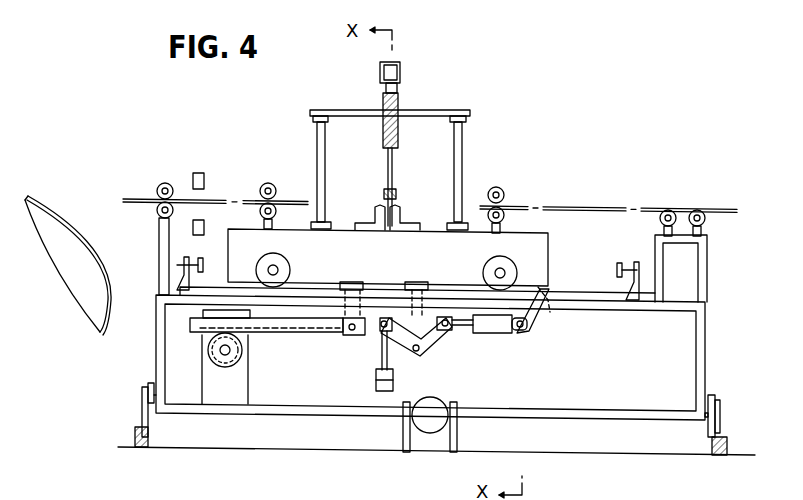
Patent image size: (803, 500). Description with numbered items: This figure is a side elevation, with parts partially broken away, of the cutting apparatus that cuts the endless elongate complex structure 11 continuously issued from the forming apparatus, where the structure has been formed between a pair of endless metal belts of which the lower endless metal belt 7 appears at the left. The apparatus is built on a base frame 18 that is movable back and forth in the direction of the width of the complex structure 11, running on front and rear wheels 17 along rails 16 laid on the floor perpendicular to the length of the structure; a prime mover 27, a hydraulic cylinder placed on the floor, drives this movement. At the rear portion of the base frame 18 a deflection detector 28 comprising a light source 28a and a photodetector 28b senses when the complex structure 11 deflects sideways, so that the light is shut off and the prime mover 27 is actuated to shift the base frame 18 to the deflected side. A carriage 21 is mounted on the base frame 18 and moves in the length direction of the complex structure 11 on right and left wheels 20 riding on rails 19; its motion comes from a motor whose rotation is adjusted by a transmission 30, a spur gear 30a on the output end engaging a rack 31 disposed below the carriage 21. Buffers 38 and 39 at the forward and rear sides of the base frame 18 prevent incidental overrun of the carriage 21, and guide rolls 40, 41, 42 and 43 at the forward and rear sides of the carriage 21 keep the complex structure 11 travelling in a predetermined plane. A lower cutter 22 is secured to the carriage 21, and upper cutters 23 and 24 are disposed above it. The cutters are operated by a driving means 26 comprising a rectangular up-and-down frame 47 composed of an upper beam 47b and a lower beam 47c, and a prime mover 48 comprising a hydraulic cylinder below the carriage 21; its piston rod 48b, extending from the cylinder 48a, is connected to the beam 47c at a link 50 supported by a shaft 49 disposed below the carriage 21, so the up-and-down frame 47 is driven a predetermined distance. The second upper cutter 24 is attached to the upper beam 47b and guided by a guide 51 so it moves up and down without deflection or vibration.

The lower endless metal belt 7 is at (80, 218).
The complex structure 11 is at (588, 198).
The rails 16 is at (134, 433).
The front and rear wheels 17 is at (140, 402).
The base frame 18 is at (613, 412).
The rails 19 is at (583, 295).
The right and left wheels 20 is at (290, 270).
The carriage 21 is at (548, 232).
The lower cutter 22 is at (378, 229).
The first upper cutter 23 is at (396, 195).
The second upper cutter 24 is at (388, 172).
The driving means 26 is at (441, 336).
The prime mover 27 is at (430, 433).
The deflection detector 28 is at (179, 165).
The light source 28a is at (197, 172).
The photodetector 28b is at (207, 220).
The transmission 30 is at (248, 393).
The spur gear 30a is at (208, 352).
The rack 31 is at (305, 330).
The buffer 38 is at (629, 262).
The buffer 39 is at (183, 262).
The guide roll 40 is at (160, 183).
The guide roll 41 is at (706, 222).
The guide roll 42 is at (268, 182).
The guide roll 43 is at (496, 186).
The up-and-down frame 47 is at (381, 356).
The upper beam 47b is at (401, 73).
The lower beam 47c is at (377, 384).
The prime mover 48 is at (518, 337).
The cylinder 48a is at (490, 333).
The piston rod 48b is at (485, 335).
The shaft 49 is at (416, 352).
The link 50 is at (462, 328).
The guide 51 is at (383, 141).